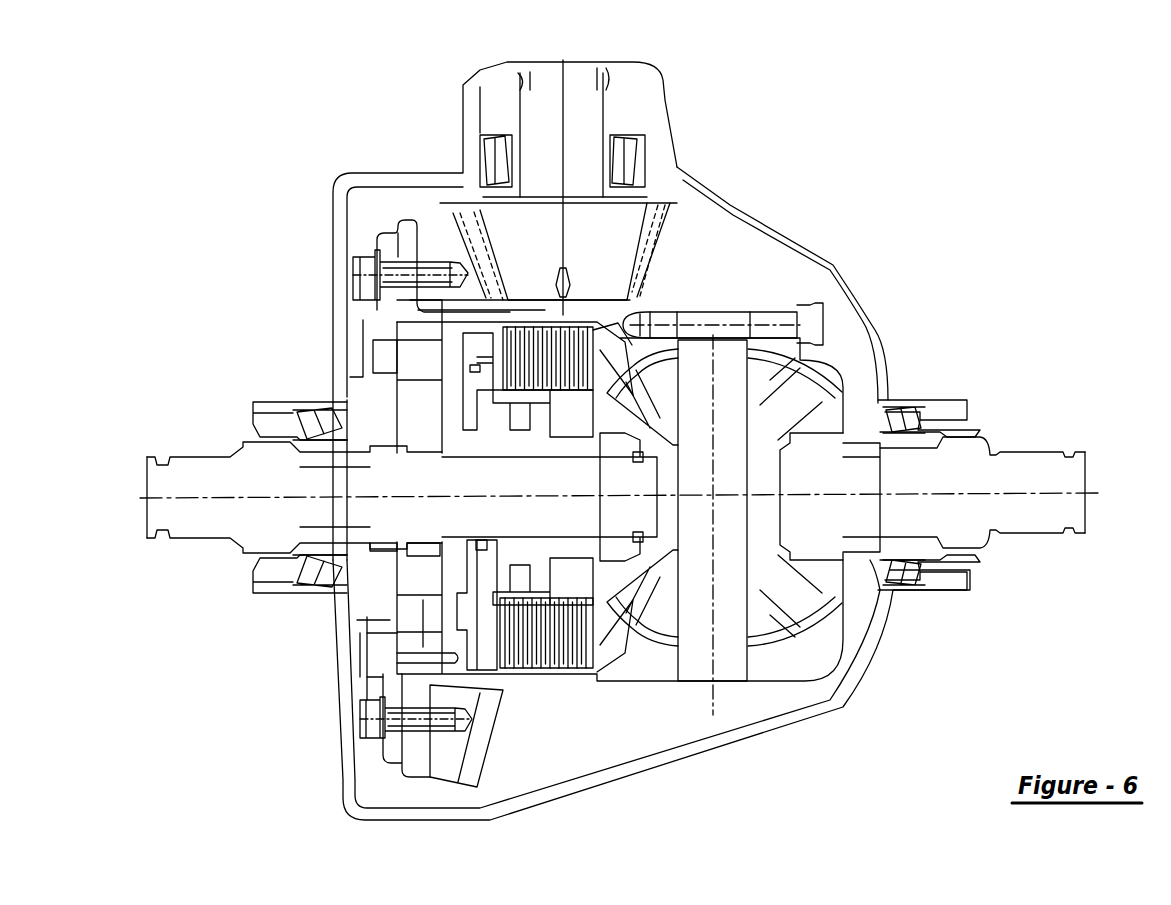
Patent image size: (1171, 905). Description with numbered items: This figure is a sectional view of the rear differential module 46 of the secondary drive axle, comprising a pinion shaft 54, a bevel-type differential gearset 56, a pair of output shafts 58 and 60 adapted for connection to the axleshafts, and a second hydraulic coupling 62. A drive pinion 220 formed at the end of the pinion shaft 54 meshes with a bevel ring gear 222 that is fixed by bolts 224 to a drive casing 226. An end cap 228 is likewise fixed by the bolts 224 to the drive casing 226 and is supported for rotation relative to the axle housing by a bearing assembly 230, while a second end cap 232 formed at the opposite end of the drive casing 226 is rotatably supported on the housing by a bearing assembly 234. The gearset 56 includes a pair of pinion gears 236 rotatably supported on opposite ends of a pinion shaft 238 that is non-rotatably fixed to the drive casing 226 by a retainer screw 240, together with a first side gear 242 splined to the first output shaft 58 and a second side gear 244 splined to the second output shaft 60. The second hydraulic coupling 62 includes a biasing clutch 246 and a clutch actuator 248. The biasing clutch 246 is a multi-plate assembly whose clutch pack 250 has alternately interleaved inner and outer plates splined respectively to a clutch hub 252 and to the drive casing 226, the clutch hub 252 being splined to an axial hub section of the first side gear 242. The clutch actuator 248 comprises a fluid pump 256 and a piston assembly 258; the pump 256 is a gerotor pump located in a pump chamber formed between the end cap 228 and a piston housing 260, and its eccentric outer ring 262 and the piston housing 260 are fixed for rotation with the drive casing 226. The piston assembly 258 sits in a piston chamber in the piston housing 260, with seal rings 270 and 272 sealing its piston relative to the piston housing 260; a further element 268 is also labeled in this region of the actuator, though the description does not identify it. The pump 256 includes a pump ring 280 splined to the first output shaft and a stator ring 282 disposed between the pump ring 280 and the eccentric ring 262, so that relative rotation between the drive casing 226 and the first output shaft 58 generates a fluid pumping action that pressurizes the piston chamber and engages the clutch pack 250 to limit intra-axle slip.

The rear differential module 46 is at (826, 176).
The pinion shaft 54 is at (585, 113).
The bevel-type differential gearset 56 is at (848, 378).
The first output shaft 58 is at (200, 473).
The second output shaft 60 is at (1023, 473).
The second hydraulic coupling 62 is at (590, 687).
The drive pinion 220 is at (660, 237).
The bevel ring gear 222 is at (447, 780).
The bolts 224 is at (372, 720).
The drive casing 226 is at (522, 681).
The end cap 228 is at (370, 382).
The bearing assembly 230 is at (330, 422).
The second end cap 232 is at (850, 377).
The bearing assembly 234 is at (900, 415).
The pinion gears 236 is at (663, 383).
The pinion shaft 238 is at (732, 683).
The retainer screw 240 is at (793, 330).
The first side gear 242 is at (617, 432).
The second side gear 244 is at (823, 443).
The biasing clutch 246 is at (617, 335).
The clutch actuator 248 is at (384, 473).
The clutch pack 250 is at (527, 365).
The clutch hub 252 is at (530, 427).
The fluid pump 256 is at (430, 437).
The piston assembly 258 is at (475, 367).
The piston housing 260 is at (470, 499).
The eccentric outer ring 262 is at (417, 642).
The actuator rod 268 is at (463, 641).
The seal ring 270 is at (478, 338).
The seal ring 272 is at (480, 547).
The pump ring 280 is at (420, 550).
The stator ring 282 is at (430, 610).